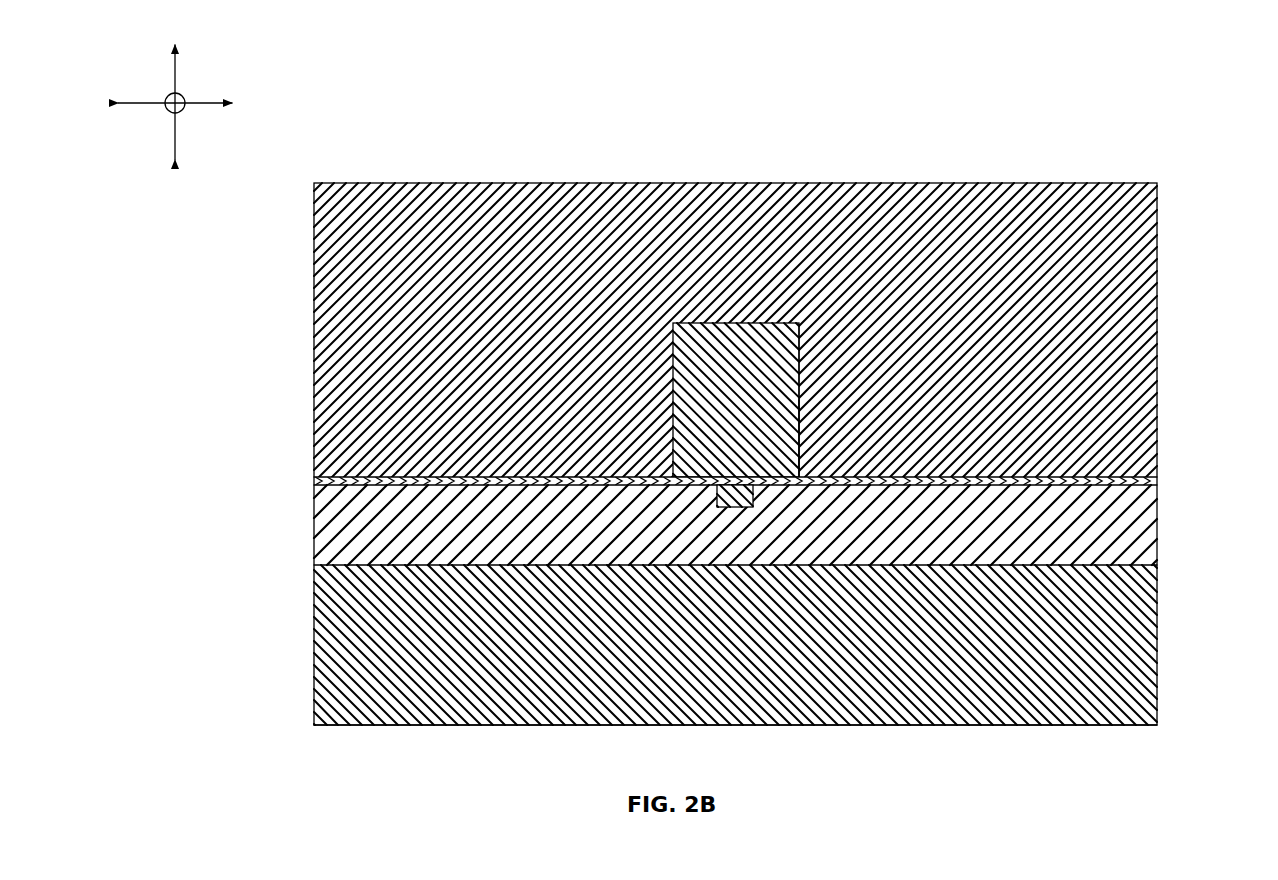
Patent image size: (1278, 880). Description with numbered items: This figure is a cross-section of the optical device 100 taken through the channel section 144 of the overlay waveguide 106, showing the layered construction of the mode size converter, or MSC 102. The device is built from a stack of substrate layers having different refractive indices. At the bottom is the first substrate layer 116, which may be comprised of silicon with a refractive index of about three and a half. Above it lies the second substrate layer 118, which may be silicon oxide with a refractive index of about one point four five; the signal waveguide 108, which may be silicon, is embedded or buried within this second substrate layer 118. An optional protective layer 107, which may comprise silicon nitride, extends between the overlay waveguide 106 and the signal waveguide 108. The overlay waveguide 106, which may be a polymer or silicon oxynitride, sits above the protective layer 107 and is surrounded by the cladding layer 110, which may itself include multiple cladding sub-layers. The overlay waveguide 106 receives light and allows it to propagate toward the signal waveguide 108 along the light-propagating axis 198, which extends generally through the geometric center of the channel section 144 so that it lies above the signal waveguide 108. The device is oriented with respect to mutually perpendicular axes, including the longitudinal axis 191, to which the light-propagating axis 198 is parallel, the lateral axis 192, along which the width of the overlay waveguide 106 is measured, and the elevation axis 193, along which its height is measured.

The optical device 100 is at (1177, 79).
The MSC 102 is at (800, 290).
The overlay waveguide 106 is at (737, 320).
The protective layer 107 is at (312, 477).
The signal waveguide 108 is at (935, 727).
The cladding layer 110 is at (312, 477).
The first substrate layer 116 is at (312, 567).
The second substrate layer 118 is at (312, 487).
The channel section 144 is at (800, 358).
The longitudinal axis 191 is at (185, 96).
The lateral axis 192 is at (205, 112).
The elevation axis 193 is at (175, 70).
The light-propagating axis 198 is at (800, 443).